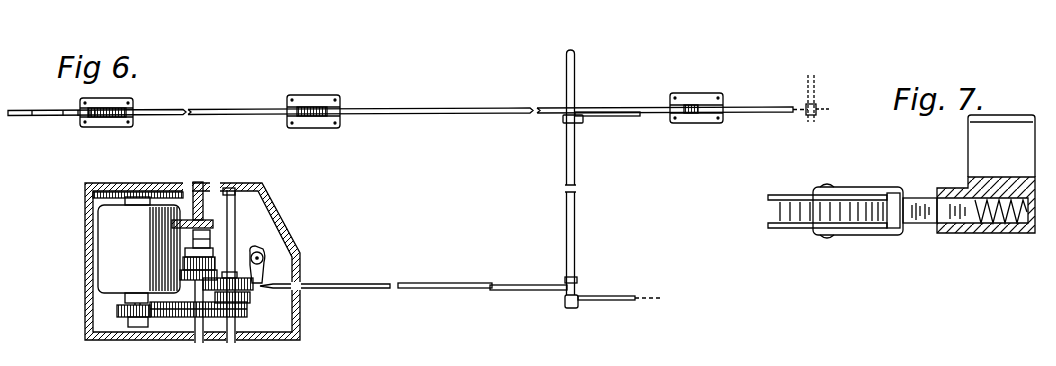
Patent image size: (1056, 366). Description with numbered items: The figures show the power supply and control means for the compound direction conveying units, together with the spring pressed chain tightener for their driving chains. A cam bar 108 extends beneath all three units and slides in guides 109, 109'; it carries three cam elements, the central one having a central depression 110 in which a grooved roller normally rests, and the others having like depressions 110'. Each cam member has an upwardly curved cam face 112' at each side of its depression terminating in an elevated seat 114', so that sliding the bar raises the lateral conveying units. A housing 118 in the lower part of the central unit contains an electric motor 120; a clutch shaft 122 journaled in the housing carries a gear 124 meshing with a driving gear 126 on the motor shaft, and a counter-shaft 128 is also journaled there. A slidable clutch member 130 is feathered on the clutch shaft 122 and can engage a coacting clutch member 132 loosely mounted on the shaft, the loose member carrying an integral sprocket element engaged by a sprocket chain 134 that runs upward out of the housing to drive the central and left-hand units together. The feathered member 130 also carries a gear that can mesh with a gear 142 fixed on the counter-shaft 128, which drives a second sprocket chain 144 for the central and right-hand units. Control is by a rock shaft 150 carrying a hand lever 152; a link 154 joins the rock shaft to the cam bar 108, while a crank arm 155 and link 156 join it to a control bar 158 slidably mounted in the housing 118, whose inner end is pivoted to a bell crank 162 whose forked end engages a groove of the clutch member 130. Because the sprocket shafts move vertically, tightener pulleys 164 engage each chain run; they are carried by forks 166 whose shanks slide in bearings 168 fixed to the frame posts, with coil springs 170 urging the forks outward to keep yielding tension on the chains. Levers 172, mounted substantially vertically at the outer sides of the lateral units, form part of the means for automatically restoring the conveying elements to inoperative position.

In FIG. 6, the cam bar 108 is at (160, 109).
In FIG. 6, the guides 109 is at (321, 121).
In FIG. 6, the guides 109' is at (414, 99).
In FIG. 6, the central depression 110 is at (329, 98).
In FIG. 6, the central depression 110' is at (408, 127).
In FIG. 6, the cam face 112' is at (83, 135).
In FIG. 6, the elevated seat 114' is at (60, 130).
In FIG. 6, the housing 118 is at (88, 212).
In FIG. 6, the electric motor 120 is at (139, 251).
In FIG. 6, the clutch shaft 122 is at (200, 343).
In FIG. 6, the gear 124 is at (177, 313).
In FIG. 6, the driving gear 126 is at (125, 311).
In FIG. 6, the counter-shaft 128 is at (228, 343).
In FIG. 6, the slidable clutch member 130 is at (208, 248).
In FIG. 6, the coacting clutch member 132 is at (208, 234).
In FIG. 6, the sprocket chain 134 is at (188, 184).
In FIG. 6, the gear 142 is at (252, 289).
In FIG. 6, the sprocket chain 144 is at (230, 308).
In FIG. 6, the rock shaft 150 is at (575, 208).
In FIG. 6, the hand lever 152 is at (608, 298).
In FIG. 6, the link 154 is at (610, 118).
In FIG. 6, the crank arm 155 is at (567, 279).
In FIG. 6, the link 156 is at (527, 292).
In FIG. 6, the control bar 158 is at (385, 287).
In FIG. 6, the bell crank 162 is at (263, 276).
In FIG. 7, the tightener pulleys 164 is at (792, 221).
In FIG. 7, the forks 166 is at (913, 218).
In FIG. 7, the bearings 168 is at (1005, 224).
In FIG. 7, the coil springs 170 is at (987, 226).
In FIG. 6, the levers 172 is at (810, 118).